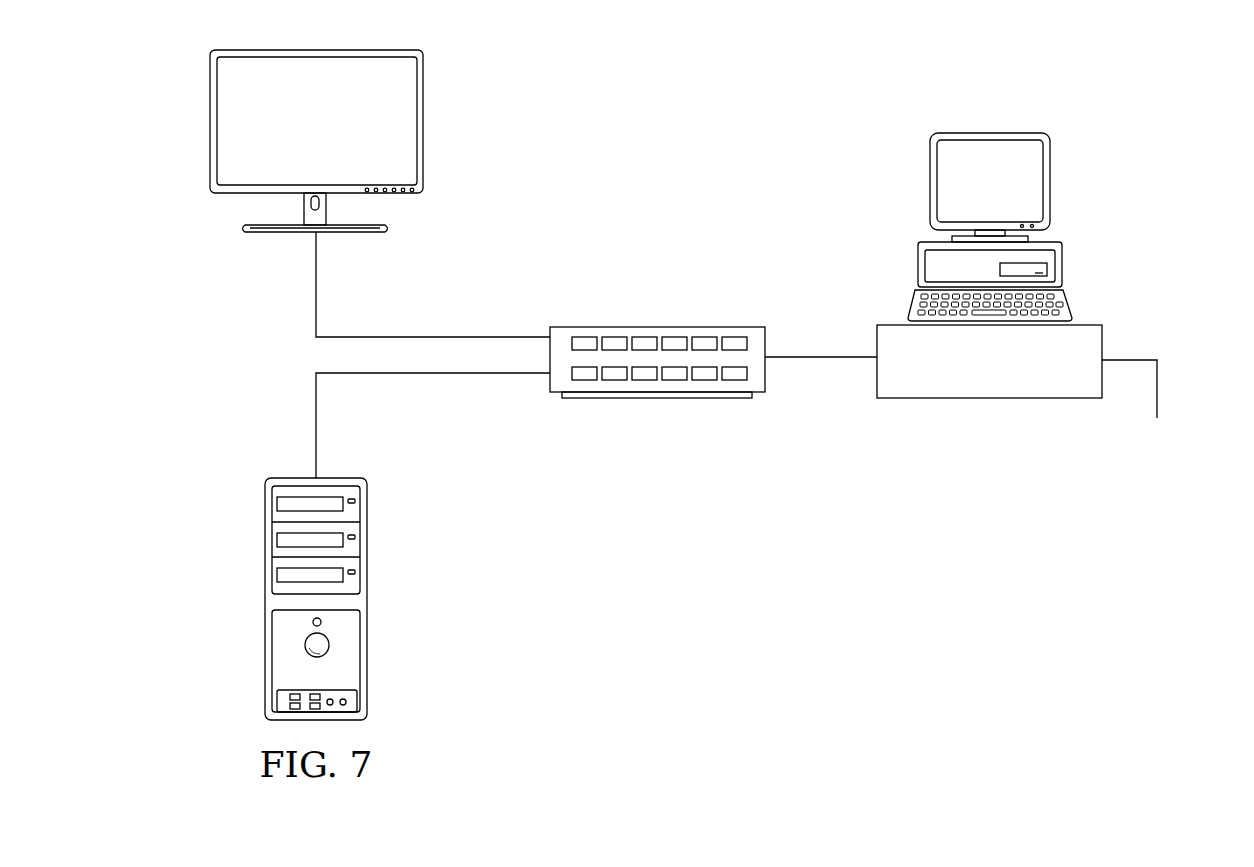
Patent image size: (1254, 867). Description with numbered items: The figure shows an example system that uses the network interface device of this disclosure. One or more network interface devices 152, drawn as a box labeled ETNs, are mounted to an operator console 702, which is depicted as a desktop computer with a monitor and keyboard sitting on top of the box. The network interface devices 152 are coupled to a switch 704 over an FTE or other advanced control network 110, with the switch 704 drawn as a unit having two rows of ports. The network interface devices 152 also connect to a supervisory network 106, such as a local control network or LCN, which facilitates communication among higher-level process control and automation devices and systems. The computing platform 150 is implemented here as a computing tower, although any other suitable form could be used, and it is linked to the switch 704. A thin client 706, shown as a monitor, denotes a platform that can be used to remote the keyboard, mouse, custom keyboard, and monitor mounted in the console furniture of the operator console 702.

The thin client 706 is at (210, 123).
The switch 704 is at (658, 327).
The advanced control network 110 is at (758, 282).
The network interface device 152 is at (989, 398).
The supervisory network 106 is at (1158, 390).
The operator console 702 is at (1050, 186).
The computing platform 150 is at (265, 600).